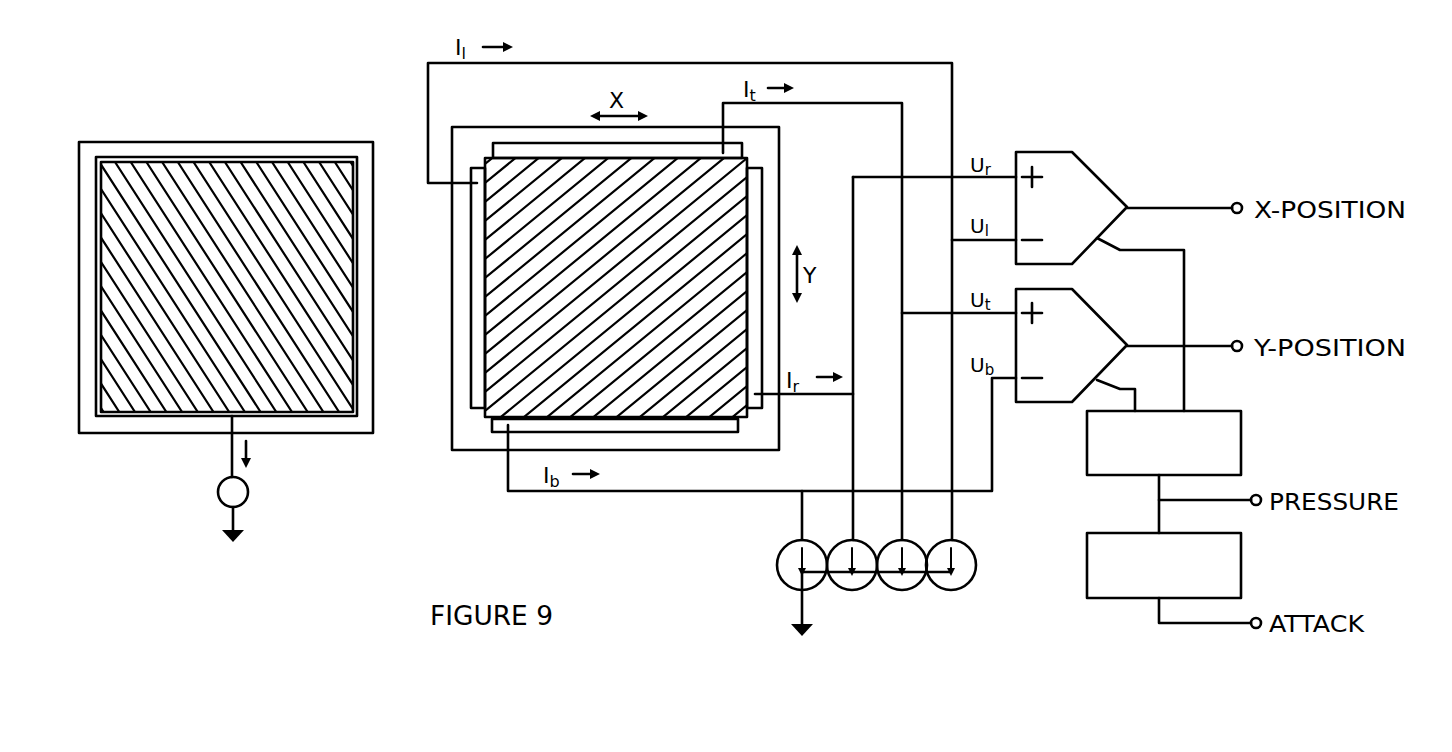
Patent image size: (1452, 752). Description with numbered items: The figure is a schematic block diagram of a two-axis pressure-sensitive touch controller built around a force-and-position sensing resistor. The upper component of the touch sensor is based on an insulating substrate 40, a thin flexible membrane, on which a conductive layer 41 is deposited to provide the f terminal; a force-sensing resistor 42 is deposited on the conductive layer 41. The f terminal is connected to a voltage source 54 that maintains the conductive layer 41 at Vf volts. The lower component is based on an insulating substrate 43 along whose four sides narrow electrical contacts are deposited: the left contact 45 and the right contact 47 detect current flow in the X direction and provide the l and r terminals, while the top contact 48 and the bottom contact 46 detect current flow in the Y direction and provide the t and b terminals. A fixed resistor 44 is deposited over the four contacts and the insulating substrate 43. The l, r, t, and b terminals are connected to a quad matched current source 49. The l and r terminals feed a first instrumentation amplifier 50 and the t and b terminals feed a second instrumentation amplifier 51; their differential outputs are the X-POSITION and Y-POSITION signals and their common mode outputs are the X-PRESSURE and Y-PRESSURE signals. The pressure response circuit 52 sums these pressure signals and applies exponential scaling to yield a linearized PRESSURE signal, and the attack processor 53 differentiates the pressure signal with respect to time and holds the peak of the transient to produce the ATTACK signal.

The insulating substrate 40 is at (87, 341).
The conductive layer 41 is at (98, 291).
The force-sensing resistor 42 is at (140, 236).
The insulating substrate 43 is at (460, 375).
The fixed resistor 44 is at (508, 305).
The left contact 45 is at (477, 258).
The bottom contact 46 is at (673, 427).
The right contact 47 is at (755, 213).
The top contact 48 is at (565, 150).
The quad matched current source 49 is at (968, 578).
The first instrumentation amplifier 50 is at (1078, 168).
The second instrumentation amplifier 51 is at (1078, 305).
The pressure response circuit 52 is at (1241, 433).
The attack processor 53 is at (1241, 555).
The voltage source 54 is at (248, 494).